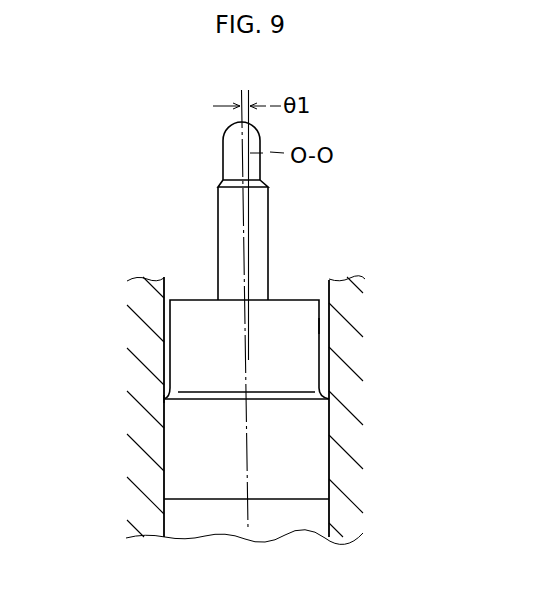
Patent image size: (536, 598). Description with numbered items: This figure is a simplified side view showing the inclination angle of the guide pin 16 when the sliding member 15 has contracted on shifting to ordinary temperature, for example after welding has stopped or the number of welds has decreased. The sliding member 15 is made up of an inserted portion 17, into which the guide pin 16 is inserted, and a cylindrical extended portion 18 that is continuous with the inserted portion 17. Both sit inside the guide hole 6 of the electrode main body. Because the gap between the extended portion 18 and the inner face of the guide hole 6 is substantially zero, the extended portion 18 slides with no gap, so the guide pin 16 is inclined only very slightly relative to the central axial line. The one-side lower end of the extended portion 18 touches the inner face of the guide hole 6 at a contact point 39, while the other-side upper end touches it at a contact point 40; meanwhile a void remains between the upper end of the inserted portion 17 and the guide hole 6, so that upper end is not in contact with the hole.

The guide hole 6 is at (318, 285).
The sliding member 15 is at (322, 326).
The guide pin 16 is at (218, 231).
The inserted portion 17 is at (303, 368).
The extended portion 18 is at (312, 448).
The contact point 39 is at (329, 499).
The contact point 40 is at (164, 400).